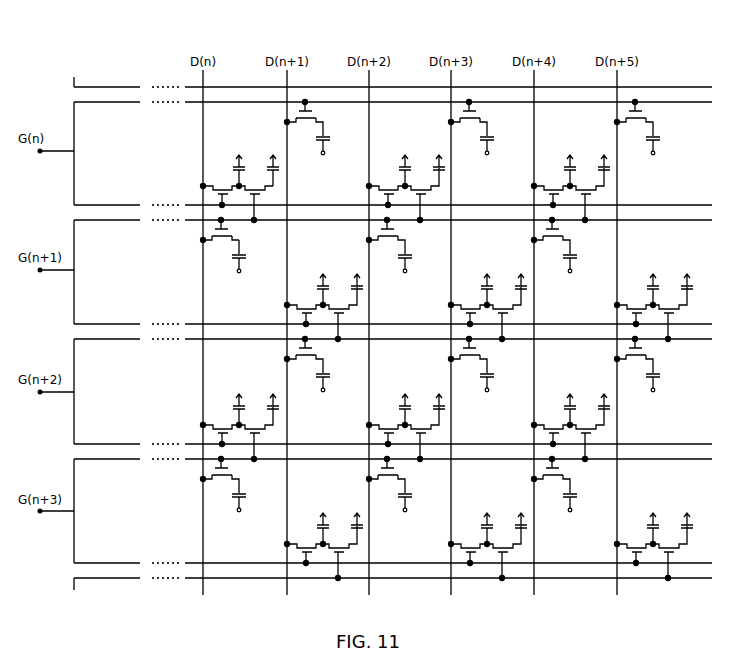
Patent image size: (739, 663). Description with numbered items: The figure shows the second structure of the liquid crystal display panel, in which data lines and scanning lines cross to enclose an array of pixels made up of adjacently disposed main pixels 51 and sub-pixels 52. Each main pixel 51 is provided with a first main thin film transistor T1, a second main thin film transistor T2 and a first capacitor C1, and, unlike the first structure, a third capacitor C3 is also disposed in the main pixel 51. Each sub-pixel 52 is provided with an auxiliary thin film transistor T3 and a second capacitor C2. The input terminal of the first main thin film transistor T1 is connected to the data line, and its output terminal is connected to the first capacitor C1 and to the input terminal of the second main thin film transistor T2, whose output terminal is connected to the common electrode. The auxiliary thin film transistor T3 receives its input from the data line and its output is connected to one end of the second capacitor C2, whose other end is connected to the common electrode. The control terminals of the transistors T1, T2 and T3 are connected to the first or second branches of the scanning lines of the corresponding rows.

The main pixel 51 is at (203, 115).
The sub-pixel 52 is at (169, 140).
The first main thin film transistor T1 is at (220, 188).
The second main thin film transistor T2 is at (256, 195).
The auxiliary thin film transistor T3 is at (220, 242).
The first capacitor C1 is at (233, 172).
The second capacitor C2 is at (245, 256).
The third capacitor C3 is at (268, 170).